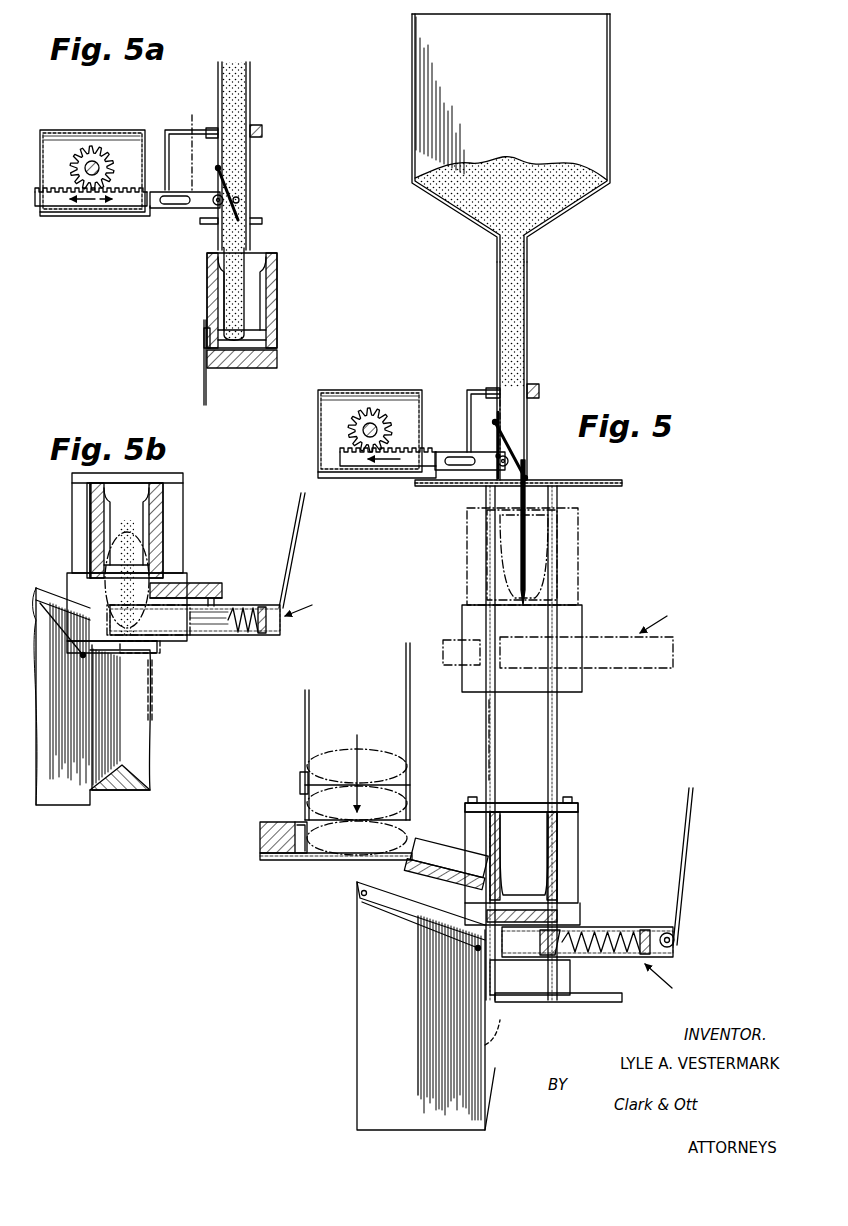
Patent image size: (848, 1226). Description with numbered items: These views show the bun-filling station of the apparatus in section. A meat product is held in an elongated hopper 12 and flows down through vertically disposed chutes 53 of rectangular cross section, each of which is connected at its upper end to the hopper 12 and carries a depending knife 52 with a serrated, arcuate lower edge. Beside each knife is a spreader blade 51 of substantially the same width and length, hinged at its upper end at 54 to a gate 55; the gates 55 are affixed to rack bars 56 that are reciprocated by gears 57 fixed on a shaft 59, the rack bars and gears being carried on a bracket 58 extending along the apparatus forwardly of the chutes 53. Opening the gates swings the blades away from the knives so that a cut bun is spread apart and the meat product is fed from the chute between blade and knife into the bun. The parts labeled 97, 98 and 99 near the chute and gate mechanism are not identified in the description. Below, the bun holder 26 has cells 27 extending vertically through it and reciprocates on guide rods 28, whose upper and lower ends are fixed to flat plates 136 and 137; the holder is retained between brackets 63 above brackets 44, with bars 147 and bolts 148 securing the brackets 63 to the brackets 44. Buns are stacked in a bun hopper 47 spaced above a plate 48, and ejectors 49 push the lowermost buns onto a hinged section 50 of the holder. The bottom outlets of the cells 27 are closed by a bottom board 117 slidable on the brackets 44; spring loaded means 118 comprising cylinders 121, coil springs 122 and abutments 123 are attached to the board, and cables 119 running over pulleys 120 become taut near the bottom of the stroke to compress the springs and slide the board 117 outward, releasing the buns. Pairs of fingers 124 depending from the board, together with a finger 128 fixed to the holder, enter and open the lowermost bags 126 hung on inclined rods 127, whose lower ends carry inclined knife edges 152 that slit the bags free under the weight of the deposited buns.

In FIG. 5, the hopper 12 is at (612, 95).
In FIG. 5, the holder 26 is at (557, 860).
In FIG. 5A, the holder 26 is at (278, 300).
In FIG. 5B, the holder 26 is at (165, 520).
In FIG. 5, the cells 27 is at (540, 540).
In FIG. 5A, the cells 27 is at (262, 275).
In FIG. 5B, the cells 27 is at (160, 502).
In FIG. 5, the guide rods 28 is at (556, 728).
In FIG. 5, the brackets 44 is at (583, 684).
In FIG. 5B, the brackets 44 is at (160, 652).
In FIG. 5, the hopper 47 is at (304, 744).
In FIG. 5, the plate 48 is at (323, 860).
In FIG. 5, the ejectors 49 is at (295, 825).
In FIG. 5, the hinged section 50 is at (432, 880).
In FIG. 5A, the hinged section 50 is at (206, 300).
In FIG. 5B, the hinged section 50 is at (92, 503).
In FIG. 5, the spreader blade 51 is at (478, 480).
In FIG. 5A, the spreader blade 51 is at (214, 226).
In FIG. 5, the knife 52 is at (530, 490).
In FIG. 5A, the knife 52 is at (248, 243).
In FIG. 5, the chutes 53 is at (528, 310).
In FIG. 5A, the chutes 53 is at (252, 100).
In FIG. 5, the hinge 54 is at (492, 423).
In FIG. 5A, the hinge 54 is at (222, 170).
In FIG. 5, the gates 55 is at (505, 436).
In FIG. 5A, the gates 55 is at (238, 200).
In FIG. 5, the rack bars 56 is at (408, 464).
In FIG. 5A, the rack bars 56 is at (126, 204).
In FIG. 5, the gears 57 is at (368, 410).
In FIG. 5A, the gears 57 is at (78, 152).
In FIG. 5, the bracket 58 is at (340, 457).
In FIG. 5A, the bracket 58 is at (108, 128).
In FIG. 5, the shaft 59 is at (363, 430).
In FIG. 5A, the shaft 59 is at (92, 160).
In FIG. 5, the brackets 63 is at (580, 582).
In FIG. 5B, the brackets 63 is at (75, 532).
In FIG. 5, the bracket 97 is at (465, 398).
In FIG. 5A, the bracket 97 is at (194, 128).
In FIG. 5, the clamp 98 is at (490, 387).
In FIG. 5A, the clamp 98 is at (212, 126).
In FIG. 5, the slotted link 99 is at (443, 468).
In FIG. 5A, the slotted link 99 is at (176, 210).
In FIG. 5, the bottom board 117 is at (560, 916).
In FIG. 5A, the bottom board 117 is at (260, 368).
In FIG. 5B, the bottom board 117 is at (198, 592).
In FIG. 5, the spring loaded means 118 is at (684, 801).
In FIG. 5B, the spring loaded means 118 is at (316, 602).
In FIG. 5, the cables 119 is at (693, 805).
In FIG. 5B, the cables 119 is at (293, 553).
In FIG. 5, the pulleys 120 is at (675, 940).
In FIG. 5, the cylinders 121 is at (674, 957).
In FIG. 5B, the cylinders 121 is at (282, 630).
In FIG. 5, the coil springs 122 is at (585, 960).
In FIG. 5B, the coil springs 122 is at (232, 636).
In FIG. 5, the abutments 123 is at (652, 934).
In FIG. 5B, the abutments 123 is at (264, 634).
In FIG. 5B, the fingers 124 is at (153, 690).
In FIG. 5, the bags 126 is at (470, 1035).
In FIG. 5B, the bags 126 is at (135, 755).
In FIG. 5, the inclined rods 127 is at (390, 914).
In FIG. 5B, the inclined rods 127 is at (50, 595).
In FIG. 5, the finger 128 is at (486, 738).
In FIG. 5A, the finger 128 is at (204, 384).
In FIG. 5B, the finger 128 is at (108, 782).
In FIG. 5, the flat plate 136 is at (624, 483).
In FIG. 5, the flat plate 137 is at (622, 996).
In FIG. 5, the bars 147 is at (576, 808).
In FIG. 5, the bolts 148 is at (568, 797).
In FIG. 5, the inclined knife edges 152 is at (475, 948).
In FIG. 5B, the inclined knife edges 152 is at (84, 656).